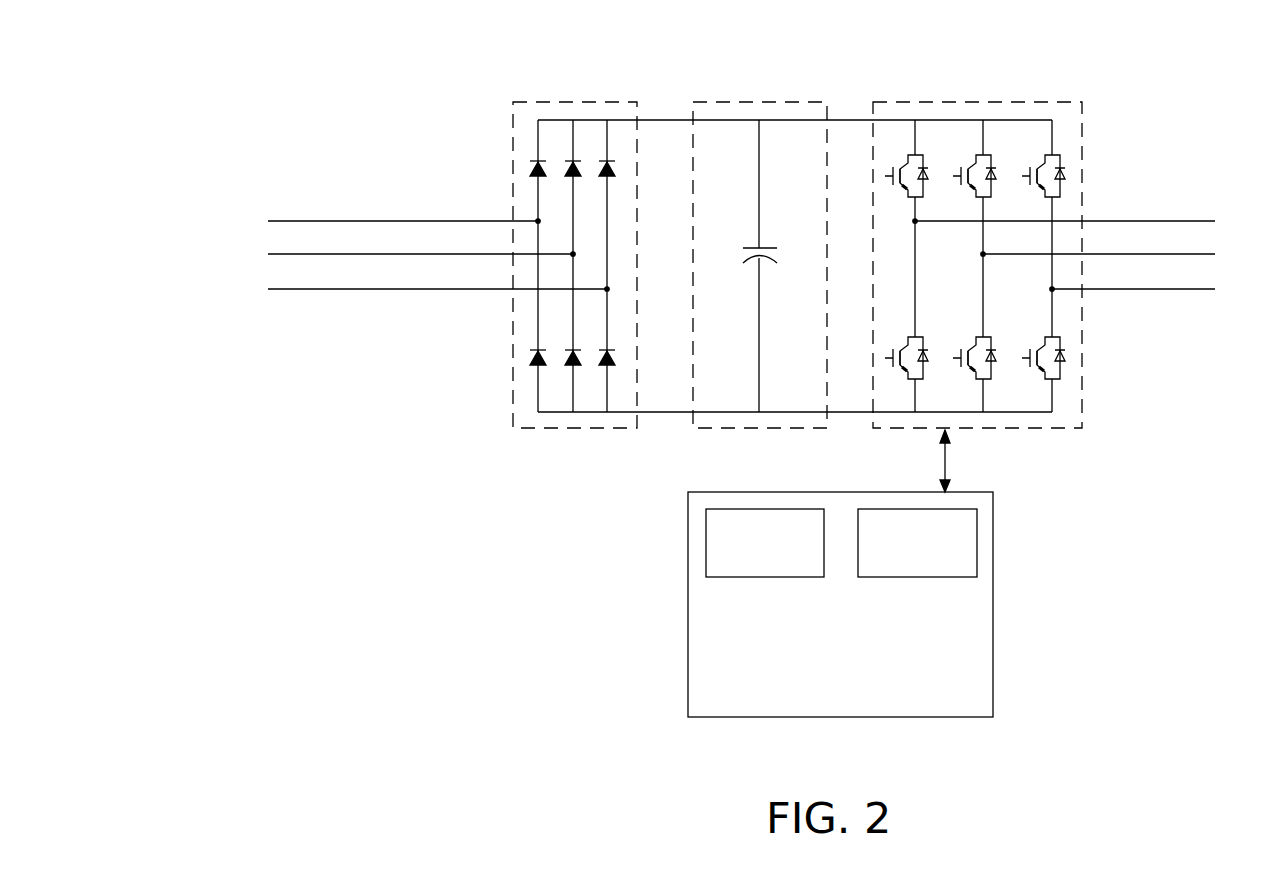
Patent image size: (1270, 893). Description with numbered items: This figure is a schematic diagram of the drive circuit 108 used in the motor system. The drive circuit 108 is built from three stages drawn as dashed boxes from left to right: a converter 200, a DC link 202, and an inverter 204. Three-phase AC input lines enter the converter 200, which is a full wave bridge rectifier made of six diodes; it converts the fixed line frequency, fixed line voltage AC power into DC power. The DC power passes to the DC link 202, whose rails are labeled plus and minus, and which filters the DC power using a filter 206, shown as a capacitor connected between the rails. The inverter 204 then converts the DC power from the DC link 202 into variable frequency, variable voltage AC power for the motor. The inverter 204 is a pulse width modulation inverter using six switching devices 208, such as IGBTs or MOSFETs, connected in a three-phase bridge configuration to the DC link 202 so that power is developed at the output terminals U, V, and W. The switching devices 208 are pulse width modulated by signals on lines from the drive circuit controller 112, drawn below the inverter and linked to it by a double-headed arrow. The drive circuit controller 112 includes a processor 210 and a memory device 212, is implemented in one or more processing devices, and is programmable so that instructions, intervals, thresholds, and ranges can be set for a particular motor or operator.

The drive circuit 108 is at (1074, 56).
The converter 200 is at (531, 103).
The DC link 202 is at (705, 103).
The inverter 204 is at (884, 103).
The filter 206 is at (763, 247).
The switching devices 208 is at (983, 153).
The processor 210 is at (760, 578).
The memory device 212 is at (912, 578).
The drive circuit controller 112 is at (840, 573).